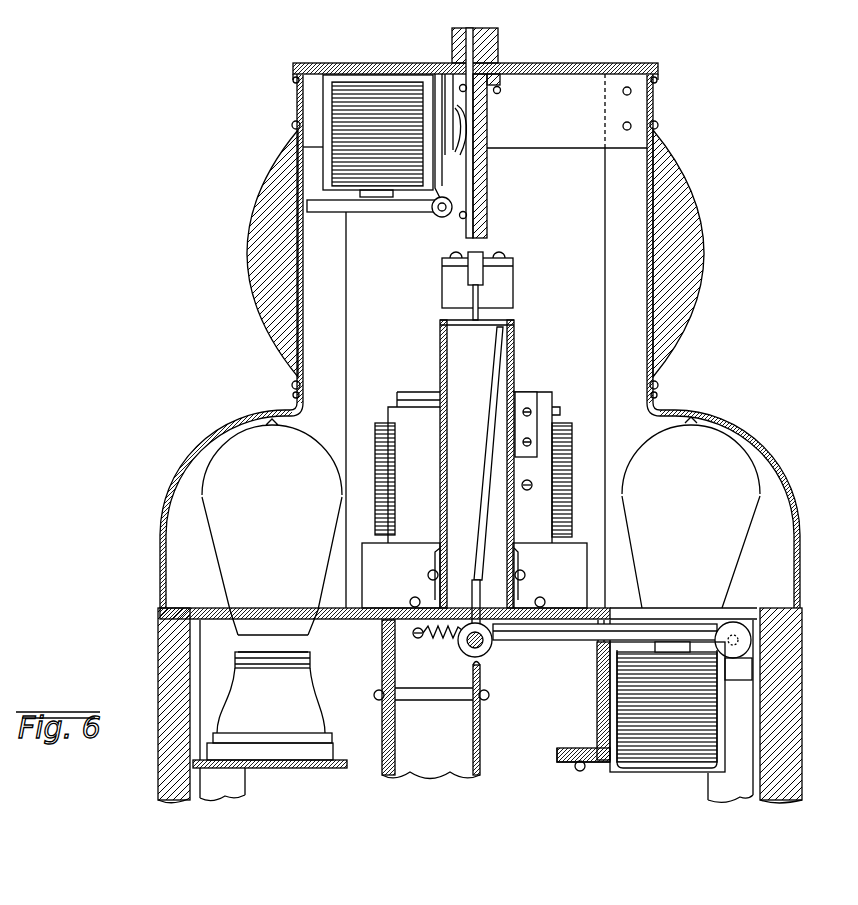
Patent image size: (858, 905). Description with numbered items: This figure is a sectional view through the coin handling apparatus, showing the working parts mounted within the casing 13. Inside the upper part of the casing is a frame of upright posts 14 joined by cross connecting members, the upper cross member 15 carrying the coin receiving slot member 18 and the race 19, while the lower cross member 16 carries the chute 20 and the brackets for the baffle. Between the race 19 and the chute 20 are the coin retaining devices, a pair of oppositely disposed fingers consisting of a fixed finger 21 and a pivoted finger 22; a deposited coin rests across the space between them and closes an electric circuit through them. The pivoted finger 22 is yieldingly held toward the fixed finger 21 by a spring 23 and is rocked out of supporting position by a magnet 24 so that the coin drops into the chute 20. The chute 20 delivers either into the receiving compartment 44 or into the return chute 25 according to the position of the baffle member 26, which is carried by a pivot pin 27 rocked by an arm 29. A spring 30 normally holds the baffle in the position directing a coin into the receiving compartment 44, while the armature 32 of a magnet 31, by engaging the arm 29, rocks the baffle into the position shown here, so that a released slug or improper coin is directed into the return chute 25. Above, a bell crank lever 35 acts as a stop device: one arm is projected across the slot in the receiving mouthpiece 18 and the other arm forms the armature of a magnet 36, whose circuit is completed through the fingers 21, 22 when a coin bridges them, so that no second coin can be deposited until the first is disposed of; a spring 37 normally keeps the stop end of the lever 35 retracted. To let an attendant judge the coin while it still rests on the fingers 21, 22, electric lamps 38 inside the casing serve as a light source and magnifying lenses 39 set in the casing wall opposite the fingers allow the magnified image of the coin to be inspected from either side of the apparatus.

The casing 13 is at (496, 705).
The upright posts 14 is at (346, 304).
The upper cross member 15 is at (590, 148).
The cross member 16 is at (350, 619).
The coin receiving slot member 18 is at (498, 50).
The race 19 is at (488, 108).
The chute 20 is at (514, 366).
The fixed finger 21 is at (510, 258).
The pivoted finger 22 is at (464, 316).
The spring 23 is at (515, 460).
The magnet 24 is at (375, 474).
The return chute 25 is at (456, 776).
The baffle member 26 is at (482, 488).
The pivot pin 27 is at (463, 655).
The arm 29 is at (526, 640).
The spring 30 is at (433, 645).
The magnet 31 is at (645, 756).
The armature 32 is at (625, 628).
The bell crank lever 35 is at (462, 140).
The magnet 36 is at (326, 111).
The spring 37 is at (455, 165).
The electric lamp 38 is at (216, 504).
The magnifying lens 39 is at (243, 289).
The receiving compartment 44 is at (560, 743).